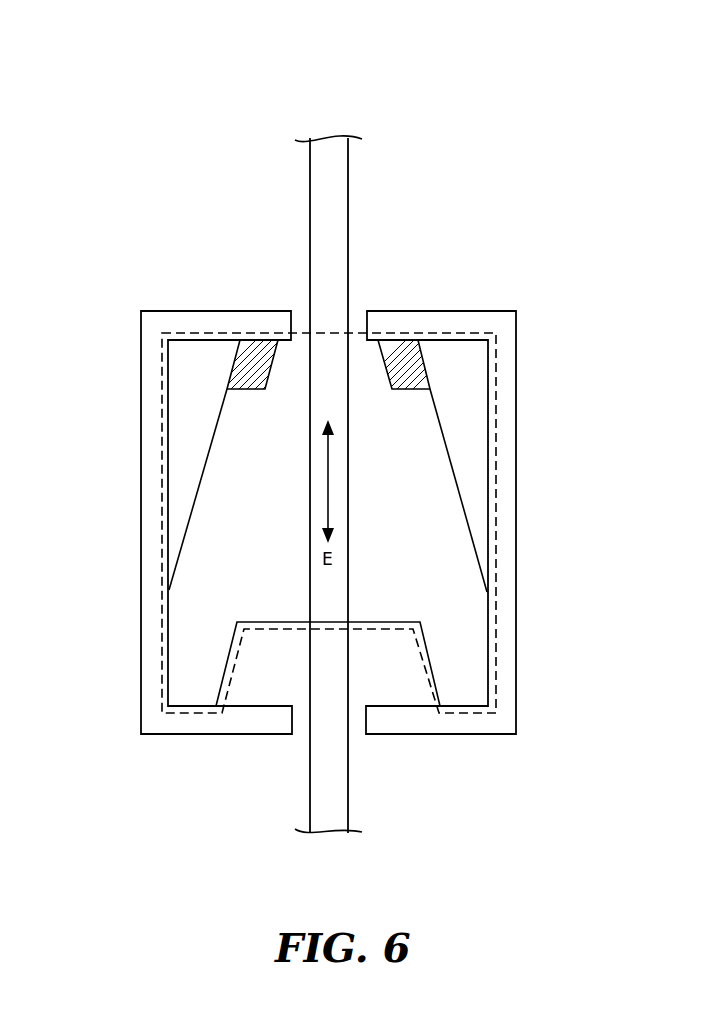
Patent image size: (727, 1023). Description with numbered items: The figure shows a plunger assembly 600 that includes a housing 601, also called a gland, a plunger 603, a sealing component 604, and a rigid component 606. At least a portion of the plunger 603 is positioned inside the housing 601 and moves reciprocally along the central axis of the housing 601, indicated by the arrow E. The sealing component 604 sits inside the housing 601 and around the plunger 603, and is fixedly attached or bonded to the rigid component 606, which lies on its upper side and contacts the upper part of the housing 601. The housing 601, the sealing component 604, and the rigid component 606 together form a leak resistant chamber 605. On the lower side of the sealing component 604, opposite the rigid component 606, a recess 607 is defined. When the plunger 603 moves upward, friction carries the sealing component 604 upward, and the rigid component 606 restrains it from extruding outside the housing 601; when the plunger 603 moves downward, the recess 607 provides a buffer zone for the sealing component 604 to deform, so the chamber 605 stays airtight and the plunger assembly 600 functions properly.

The plunger assembly 600 is at (584, 88).
The housing 601 is at (148, 641).
The plunger 603 is at (320, 207).
The sealing component 604 is at (463, 620).
The leak resistant chamber 605 is at (490, 724).
The rigid component 606 is at (402, 348).
The recess 607 is at (259, 690).